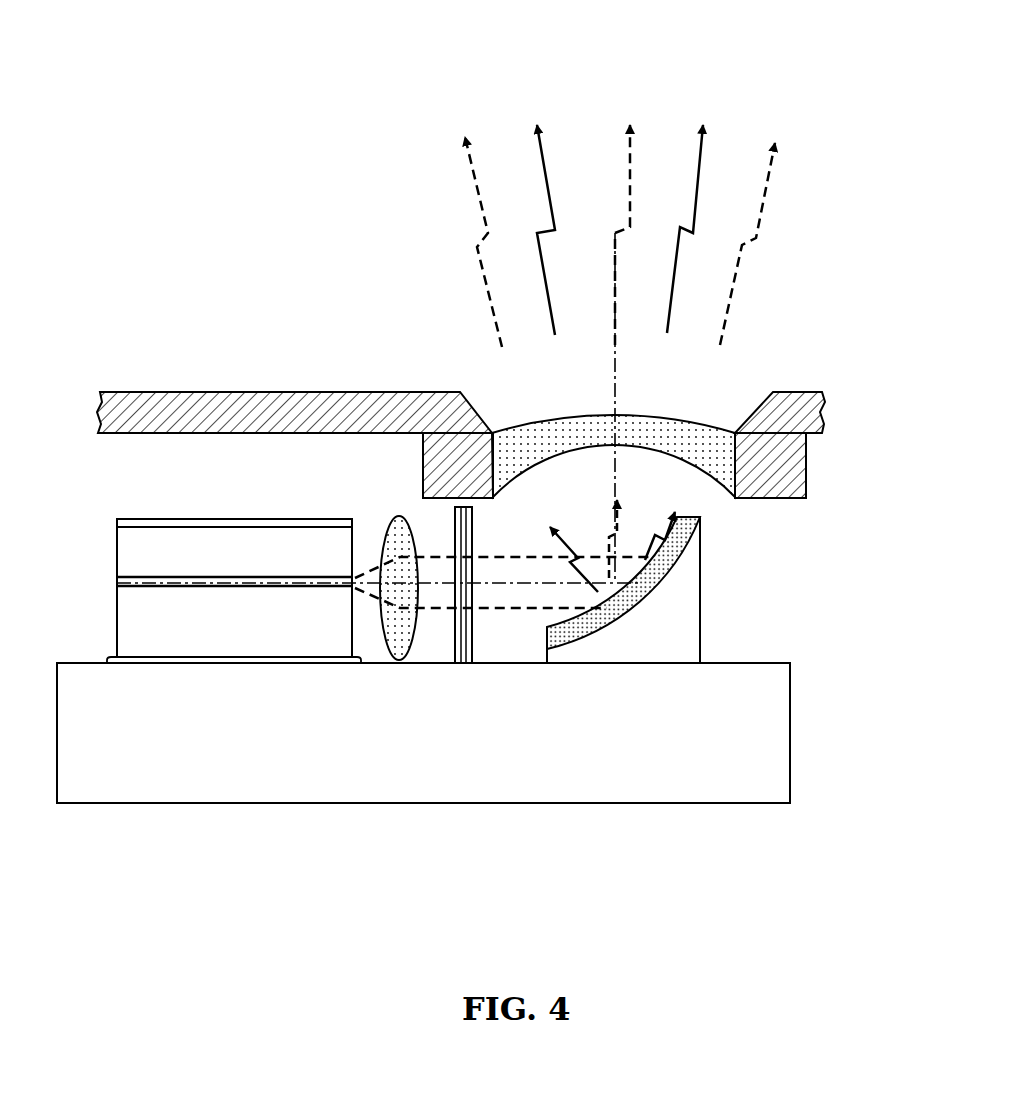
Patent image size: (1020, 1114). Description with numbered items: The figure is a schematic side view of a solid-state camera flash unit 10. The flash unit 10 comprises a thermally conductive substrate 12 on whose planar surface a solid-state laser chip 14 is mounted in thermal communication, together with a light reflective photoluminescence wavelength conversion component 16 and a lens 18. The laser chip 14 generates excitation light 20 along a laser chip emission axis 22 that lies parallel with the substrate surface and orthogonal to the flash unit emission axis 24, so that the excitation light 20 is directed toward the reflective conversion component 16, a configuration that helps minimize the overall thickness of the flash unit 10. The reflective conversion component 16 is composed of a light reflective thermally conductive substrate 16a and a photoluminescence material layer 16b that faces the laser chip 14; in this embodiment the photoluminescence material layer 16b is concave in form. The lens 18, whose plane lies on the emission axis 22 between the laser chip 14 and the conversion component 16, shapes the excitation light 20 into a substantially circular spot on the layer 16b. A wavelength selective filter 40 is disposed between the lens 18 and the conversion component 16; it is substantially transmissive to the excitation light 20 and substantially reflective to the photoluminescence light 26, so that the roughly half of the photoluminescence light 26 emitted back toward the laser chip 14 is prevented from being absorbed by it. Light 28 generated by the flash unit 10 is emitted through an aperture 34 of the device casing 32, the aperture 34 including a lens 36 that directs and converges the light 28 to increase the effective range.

The flash unit 10 is at (615, 842).
The thermally conductive substrate 12 is at (284, 739).
The solid-state laser chip 14 is at (112, 520).
The light reflective photoluminescence wavelength conversion component 16 is at (720, 640).
The light reflective substrate 16a is at (690, 648).
The photoluminescence material layer 16b is at (603, 628).
The lens 18 is at (398, 663).
The excitation light 20 is at (378, 563).
The laser chip emission axis/plane 22 is at (433, 580).
The flash unit emission axis 24 is at (489, 408).
The photoluminescence light 26 is at (753, 512).
The light 28 is at (795, 75).
The device casing 32 is at (270, 420).
The aperture 34 is at (727, 398).
The lens 36 is at (528, 437).
The wavelength selective filter 40 is at (462, 663).